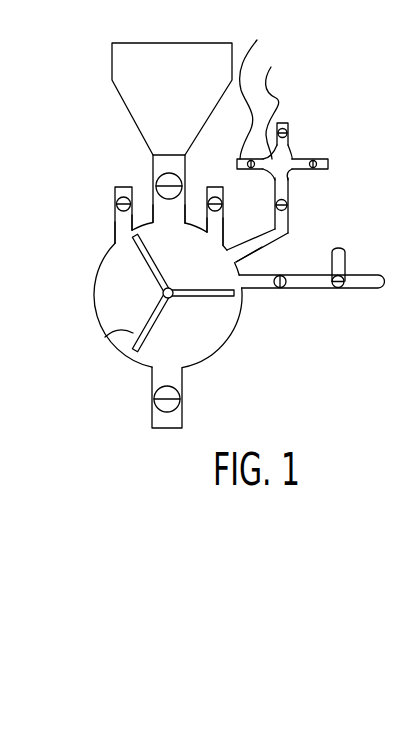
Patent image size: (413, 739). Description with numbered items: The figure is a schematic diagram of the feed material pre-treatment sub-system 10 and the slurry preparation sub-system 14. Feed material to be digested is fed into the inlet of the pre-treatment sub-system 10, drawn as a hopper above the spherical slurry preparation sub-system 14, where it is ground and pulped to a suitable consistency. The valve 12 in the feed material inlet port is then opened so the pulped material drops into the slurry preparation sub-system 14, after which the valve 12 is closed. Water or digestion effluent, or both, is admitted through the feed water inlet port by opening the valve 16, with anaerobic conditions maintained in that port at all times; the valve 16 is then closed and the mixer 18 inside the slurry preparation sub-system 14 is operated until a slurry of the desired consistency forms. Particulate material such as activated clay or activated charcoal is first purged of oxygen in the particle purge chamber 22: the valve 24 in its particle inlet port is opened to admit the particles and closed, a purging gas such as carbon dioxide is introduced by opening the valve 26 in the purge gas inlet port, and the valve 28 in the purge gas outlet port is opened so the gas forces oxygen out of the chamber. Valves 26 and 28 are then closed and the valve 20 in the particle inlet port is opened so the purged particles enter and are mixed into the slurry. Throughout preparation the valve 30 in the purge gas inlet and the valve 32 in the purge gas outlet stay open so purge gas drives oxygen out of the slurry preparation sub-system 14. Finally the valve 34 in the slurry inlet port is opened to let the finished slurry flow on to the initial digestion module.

The feed material pre-treatment sub-system 10 is at (195, 62).
The valve 12 is at (173, 173).
The slurry preparation sub-system 14 is at (100, 284).
The valve 16 is at (284, 285).
The mixer 18 is at (105, 332).
The valve 20 is at (288, 226).
The particle purge chamber 22 is at (290, 176).
The valve 24 is at (281, 122).
The valve 26 is at (257, 40).
The valve 28 is at (330, 163).
The valve 30 is at (221, 187).
The valve 32 is at (115, 190).
The valve 34 is at (167, 386).